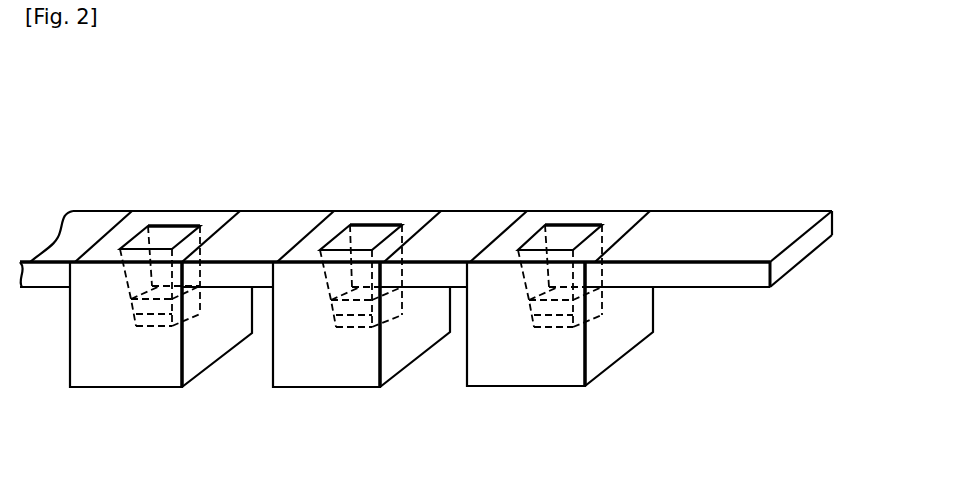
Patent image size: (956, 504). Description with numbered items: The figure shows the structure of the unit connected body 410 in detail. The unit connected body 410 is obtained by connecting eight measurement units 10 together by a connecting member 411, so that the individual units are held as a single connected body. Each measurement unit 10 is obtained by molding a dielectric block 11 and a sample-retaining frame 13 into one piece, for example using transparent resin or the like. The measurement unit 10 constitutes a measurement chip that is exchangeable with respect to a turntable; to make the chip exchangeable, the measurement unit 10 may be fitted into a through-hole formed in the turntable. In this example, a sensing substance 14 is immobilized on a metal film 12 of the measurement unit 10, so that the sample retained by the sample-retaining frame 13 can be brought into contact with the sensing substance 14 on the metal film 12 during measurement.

The unit connected body 410 is at (478, 100).
The connecting member 411 is at (713, 228).
The sample-retaining frame 13 is at (617, 220).
The measurement unit 10 is at (129, 399).
The dielectric block 11 is at (637, 313).
The metal film 12 is at (566, 308).
The sensing substance 14 is at (567, 310).